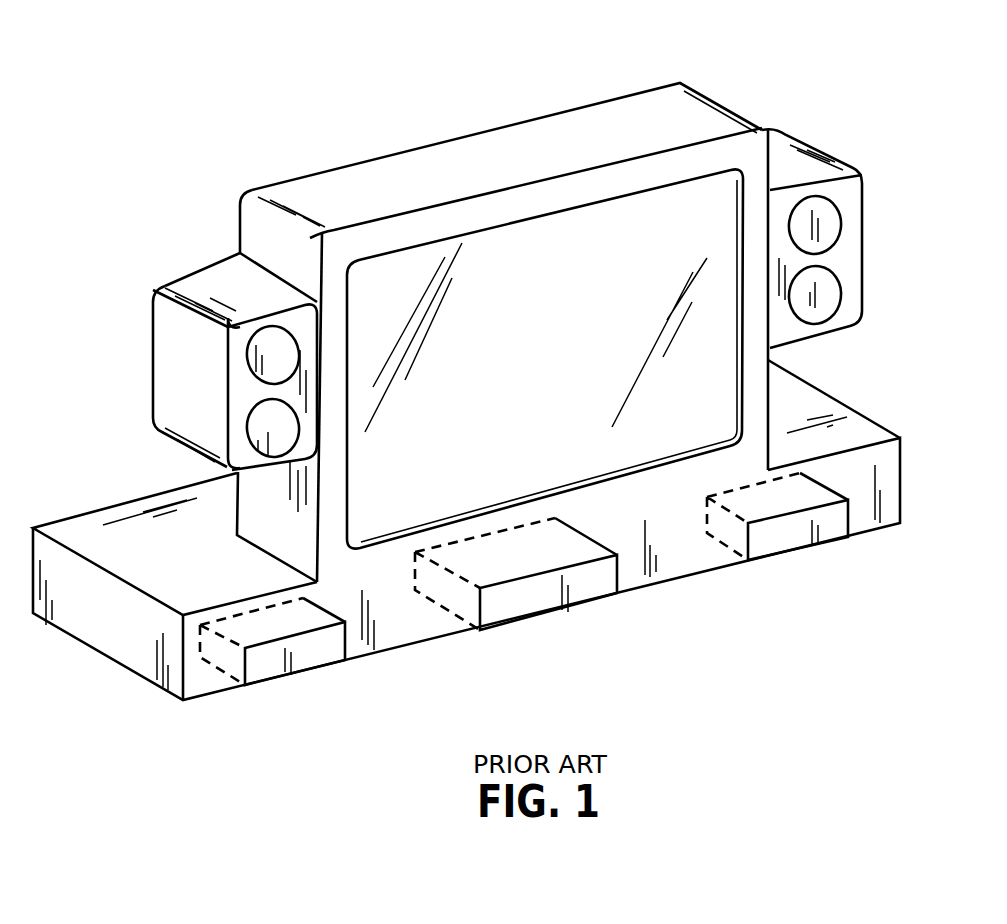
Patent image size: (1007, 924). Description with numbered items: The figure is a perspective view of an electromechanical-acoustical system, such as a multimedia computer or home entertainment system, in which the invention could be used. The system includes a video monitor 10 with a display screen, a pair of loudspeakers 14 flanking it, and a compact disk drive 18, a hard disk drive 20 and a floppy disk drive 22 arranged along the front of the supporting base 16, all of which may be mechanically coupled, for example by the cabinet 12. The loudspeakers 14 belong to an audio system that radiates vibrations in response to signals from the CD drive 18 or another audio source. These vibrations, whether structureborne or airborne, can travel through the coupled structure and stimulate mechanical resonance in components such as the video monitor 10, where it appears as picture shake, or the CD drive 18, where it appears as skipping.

The video monitor 10 is at (708, 97).
The cabinet 12 is at (295, 178).
The loudspeakers 14 is at (202, 280).
The base 16 is at (852, 425).
The compact disk (CD) drive 18 is at (563, 592).
The hard disk drive 20 is at (270, 660).
The floppy disk drive 22 is at (813, 527).